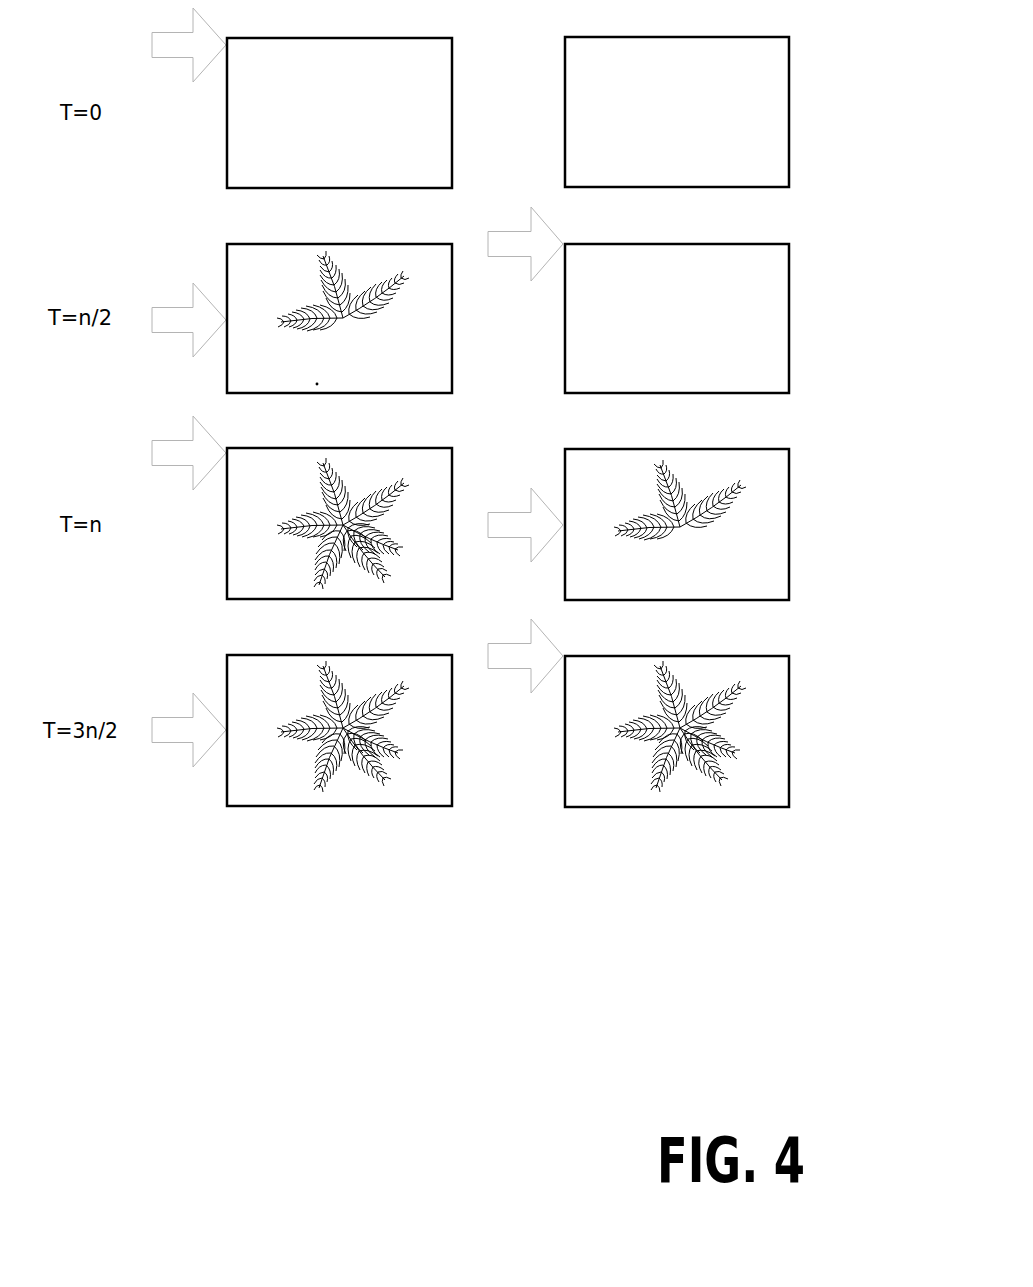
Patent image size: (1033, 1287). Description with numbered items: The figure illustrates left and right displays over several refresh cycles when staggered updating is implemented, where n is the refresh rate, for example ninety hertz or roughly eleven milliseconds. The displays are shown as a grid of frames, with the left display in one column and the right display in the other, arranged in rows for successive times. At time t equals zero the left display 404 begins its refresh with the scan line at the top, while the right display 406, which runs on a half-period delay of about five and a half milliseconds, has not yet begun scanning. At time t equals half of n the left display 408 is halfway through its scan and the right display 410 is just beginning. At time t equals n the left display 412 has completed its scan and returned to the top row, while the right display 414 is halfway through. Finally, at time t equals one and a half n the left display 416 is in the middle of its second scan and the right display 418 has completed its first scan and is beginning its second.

The left display 404 is at (455, 112).
The right display 406 is at (792, 110).
The left display 408 is at (455, 318).
The right display 410 is at (792, 316).
The left display 412 is at (455, 525).
The right display 414 is at (792, 522).
The left display 416 is at (455, 730).
The right display 418 is at (792, 727).